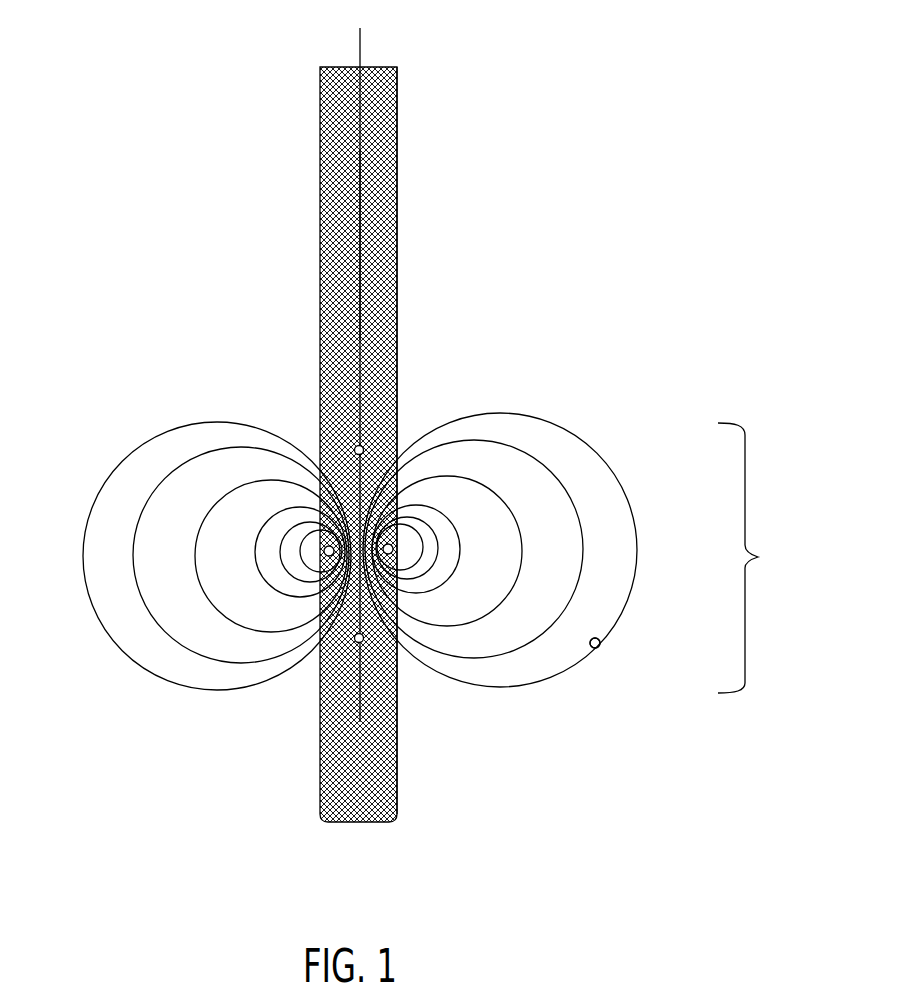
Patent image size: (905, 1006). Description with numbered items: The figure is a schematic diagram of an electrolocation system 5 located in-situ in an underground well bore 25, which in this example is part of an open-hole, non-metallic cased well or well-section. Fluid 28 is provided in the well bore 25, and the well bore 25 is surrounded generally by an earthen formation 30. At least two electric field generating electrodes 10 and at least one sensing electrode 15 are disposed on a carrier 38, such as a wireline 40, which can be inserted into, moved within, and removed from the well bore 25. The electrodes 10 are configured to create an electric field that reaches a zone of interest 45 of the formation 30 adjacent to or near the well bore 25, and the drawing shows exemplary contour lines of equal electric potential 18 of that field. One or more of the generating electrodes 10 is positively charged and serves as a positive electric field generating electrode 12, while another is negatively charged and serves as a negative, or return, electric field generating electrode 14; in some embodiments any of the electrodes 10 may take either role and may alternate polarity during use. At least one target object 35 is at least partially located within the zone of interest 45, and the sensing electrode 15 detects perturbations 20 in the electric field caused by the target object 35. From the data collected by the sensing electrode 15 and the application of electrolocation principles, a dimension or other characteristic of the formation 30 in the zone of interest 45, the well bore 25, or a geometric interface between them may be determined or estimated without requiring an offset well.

The electrolocation system 5 is at (576, 189).
The electric field generating electrodes 10 is at (320, 548).
The positive electric field generating electrode 12 is at (320, 552).
The negative electric field generating electrode 14 is at (395, 548).
The sensing electrode 15 is at (397, 396).
The contour lines of equal electric potential 18 is at (172, 428).
The perturbations 20 is at (601, 640).
The well bore 25 is at (379, 68).
The fluid 28 is at (398, 190).
The earthen formation 30 is at (287, 361).
The target object 35 is at (598, 648).
The carrier 38 is at (358, 243).
The wireline 40 is at (360, 36).
The zone of interest 45 is at (758, 557).